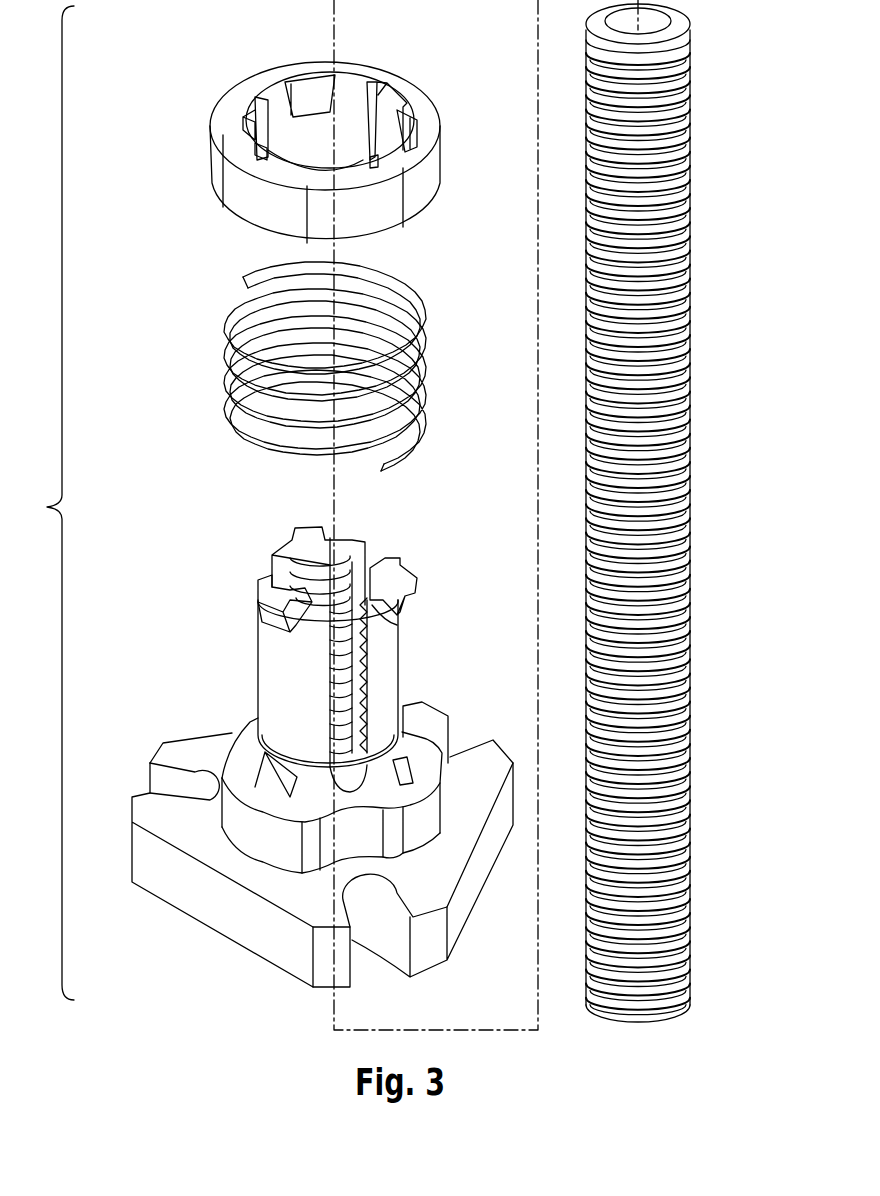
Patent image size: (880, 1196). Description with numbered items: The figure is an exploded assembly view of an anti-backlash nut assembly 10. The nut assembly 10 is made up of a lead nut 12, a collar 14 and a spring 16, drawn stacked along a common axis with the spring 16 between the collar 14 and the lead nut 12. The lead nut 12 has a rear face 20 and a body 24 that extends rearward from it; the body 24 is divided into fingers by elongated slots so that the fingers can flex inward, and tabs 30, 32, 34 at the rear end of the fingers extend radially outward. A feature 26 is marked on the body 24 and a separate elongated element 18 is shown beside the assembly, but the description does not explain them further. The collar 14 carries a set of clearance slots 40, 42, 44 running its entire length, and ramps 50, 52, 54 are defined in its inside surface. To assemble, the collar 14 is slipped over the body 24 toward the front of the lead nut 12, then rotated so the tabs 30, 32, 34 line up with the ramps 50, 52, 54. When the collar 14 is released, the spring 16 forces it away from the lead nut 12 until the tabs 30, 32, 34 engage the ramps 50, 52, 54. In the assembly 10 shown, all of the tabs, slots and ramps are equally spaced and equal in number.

The nut assembly 10 is at (45, 503).
The lead nut 12 is at (205, 738).
The collar 14 is at (208, 146).
The spring 16 is at (226, 377).
The threaded rod 18 is at (690, 351).
The rear face 20 is at (170, 818).
The body 24 is at (258, 680).
The internal thread 26 is at (330, 662).
The tab 30 is at (318, 535).
The tab 32 is at (415, 593).
The tab 34 is at (268, 610).
The clearance slot 40 is at (238, 108).
The clearance slot 42 is at (392, 92).
The clearance slot 44 is at (420, 183).
The ramp 50 is at (320, 80).
The ramp 52 is at (402, 143).
The ramp 54 is at (264, 188).